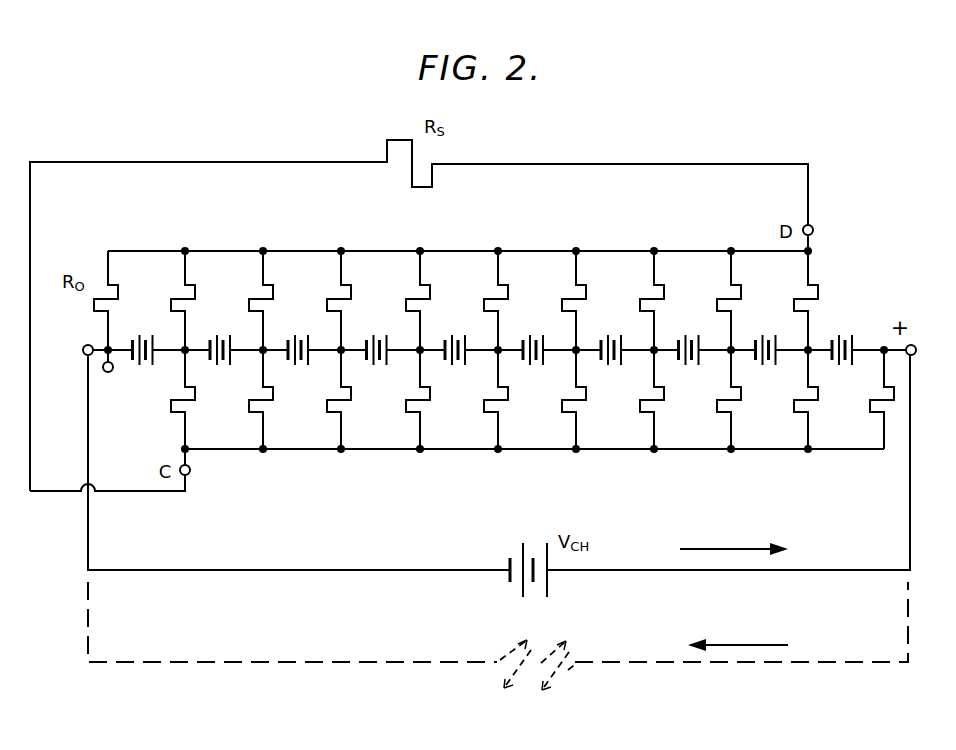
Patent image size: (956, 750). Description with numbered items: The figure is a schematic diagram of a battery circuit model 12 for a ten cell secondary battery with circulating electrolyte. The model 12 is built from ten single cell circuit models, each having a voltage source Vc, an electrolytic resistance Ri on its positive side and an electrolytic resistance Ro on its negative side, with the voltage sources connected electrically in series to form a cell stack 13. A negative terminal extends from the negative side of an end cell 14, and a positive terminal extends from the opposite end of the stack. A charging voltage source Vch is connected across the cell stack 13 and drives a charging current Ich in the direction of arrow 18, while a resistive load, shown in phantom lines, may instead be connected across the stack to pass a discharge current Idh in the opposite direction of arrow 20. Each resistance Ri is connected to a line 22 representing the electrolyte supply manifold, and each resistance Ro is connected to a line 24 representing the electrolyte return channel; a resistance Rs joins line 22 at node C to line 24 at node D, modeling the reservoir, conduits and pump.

The battery circuit model 12 is at (234, 668).
The cell stack 13 is at (494, 364).
The end cell 14 is at (136, 378).
The arrow 18 is at (690, 549).
The arrow 20 is at (766, 645).
The line 22 is at (364, 451).
The line 24 is at (322, 251).